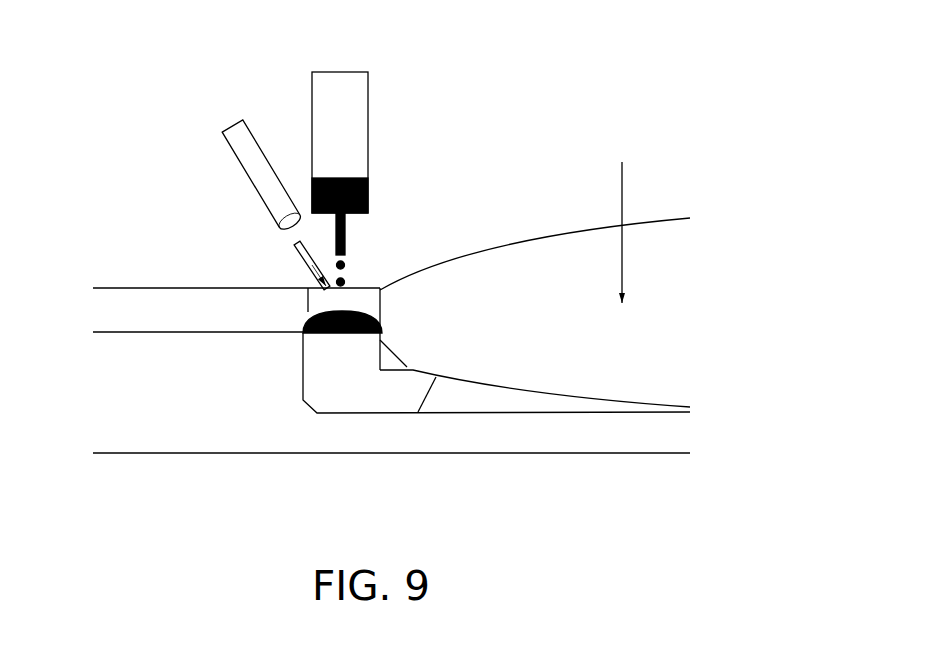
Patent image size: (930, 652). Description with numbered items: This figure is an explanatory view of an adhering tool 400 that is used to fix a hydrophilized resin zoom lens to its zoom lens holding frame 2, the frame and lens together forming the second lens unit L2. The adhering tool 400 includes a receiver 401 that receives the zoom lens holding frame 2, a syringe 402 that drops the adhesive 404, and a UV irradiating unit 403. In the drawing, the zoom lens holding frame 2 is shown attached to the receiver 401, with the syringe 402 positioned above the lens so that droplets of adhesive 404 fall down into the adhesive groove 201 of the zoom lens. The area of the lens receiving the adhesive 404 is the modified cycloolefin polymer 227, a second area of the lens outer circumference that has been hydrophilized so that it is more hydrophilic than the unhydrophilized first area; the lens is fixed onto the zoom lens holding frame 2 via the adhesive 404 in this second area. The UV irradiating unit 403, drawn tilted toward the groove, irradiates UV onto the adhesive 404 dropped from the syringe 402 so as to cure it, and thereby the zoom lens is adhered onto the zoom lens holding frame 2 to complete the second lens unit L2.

The adhering tool 400 is at (621, 82).
The receiver 401 is at (188, 405).
The zoom lens holding frame 2 is at (165, 318).
The adhesive groove 201 is at (328, 298).
The modified cycloolefin polymer 227 is at (383, 313).
The syringe 402 is at (358, 138).
The UV irradiating unit 403 is at (243, 155).
The adhesive 404 is at (357, 311).
The second lens unit L2 is at (612, 218).